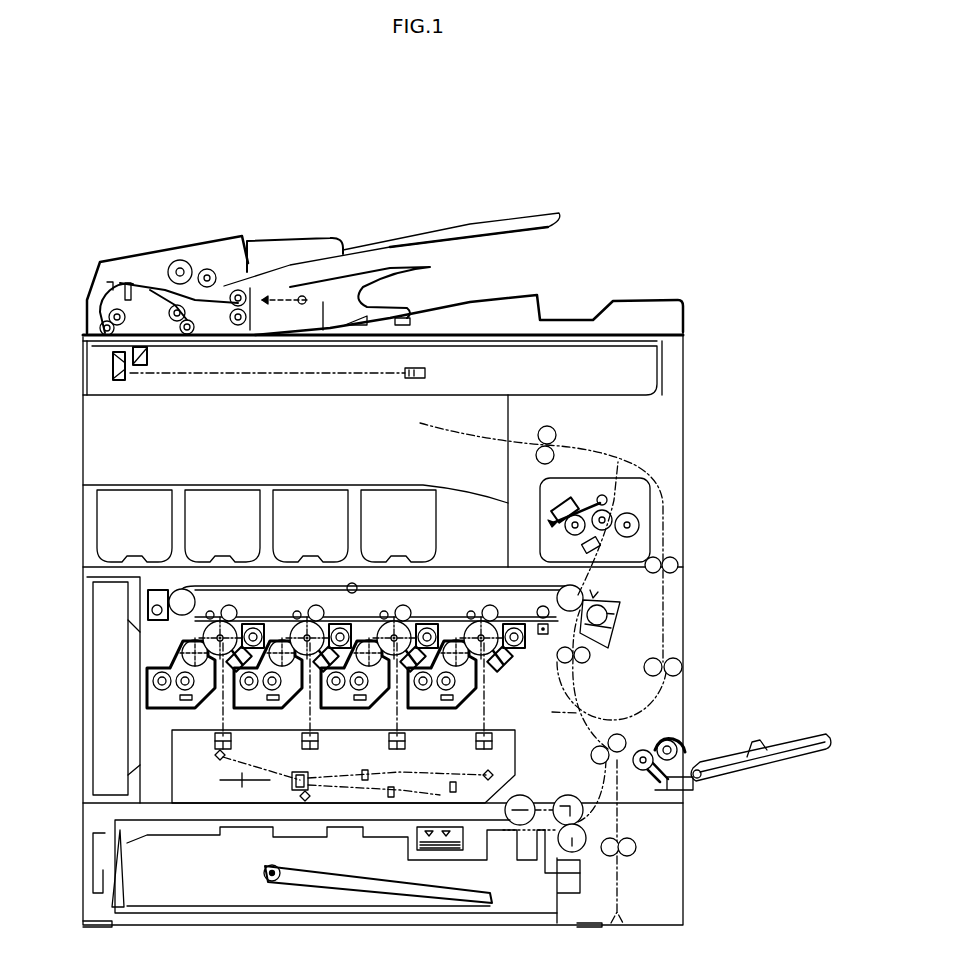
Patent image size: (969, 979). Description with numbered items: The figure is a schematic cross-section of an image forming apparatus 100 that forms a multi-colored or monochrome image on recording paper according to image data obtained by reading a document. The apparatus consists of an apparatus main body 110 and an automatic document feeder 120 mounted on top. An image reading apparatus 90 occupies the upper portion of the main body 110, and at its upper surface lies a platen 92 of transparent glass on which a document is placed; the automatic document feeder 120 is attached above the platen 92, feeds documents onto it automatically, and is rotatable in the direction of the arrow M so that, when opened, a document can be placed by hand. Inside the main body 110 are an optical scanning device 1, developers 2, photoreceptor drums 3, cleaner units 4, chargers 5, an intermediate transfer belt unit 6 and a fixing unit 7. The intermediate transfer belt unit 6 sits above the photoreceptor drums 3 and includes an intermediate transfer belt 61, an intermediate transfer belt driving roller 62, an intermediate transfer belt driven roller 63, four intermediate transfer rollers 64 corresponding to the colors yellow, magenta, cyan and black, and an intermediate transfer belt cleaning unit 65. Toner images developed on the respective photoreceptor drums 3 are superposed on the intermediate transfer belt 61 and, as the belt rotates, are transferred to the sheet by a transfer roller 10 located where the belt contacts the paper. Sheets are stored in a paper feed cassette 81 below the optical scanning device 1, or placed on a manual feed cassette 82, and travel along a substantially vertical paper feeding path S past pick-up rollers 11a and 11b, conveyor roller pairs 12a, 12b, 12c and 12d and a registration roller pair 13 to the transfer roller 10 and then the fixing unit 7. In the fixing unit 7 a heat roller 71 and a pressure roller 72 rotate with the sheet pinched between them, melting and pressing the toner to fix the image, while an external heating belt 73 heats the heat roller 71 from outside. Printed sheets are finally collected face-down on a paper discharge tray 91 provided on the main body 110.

The image forming apparatus 100 is at (655, 196).
The apparatus main body 110 is at (82, 453).
The automatic document feeder 120 is at (205, 224).
The arrow M is at (390, 198).
The image reading apparatus 90 is at (663, 367).
The paper discharge tray 91 is at (290, 484).
The platen 92 is at (462, 333).
The optical scanning device 1 is at (520, 745).
The developer 2 is at (180, 652).
The photoreceptor drum 3 is at (211, 613).
The cleaner unit 4 is at (254, 630).
The charger 5 is at (222, 700).
The intermediate transfer belt unit 6 is at (458, 586).
The intermediate transfer belt 61 is at (487, 585).
The intermediate transfer belt driving roller 62 is at (586, 590).
The intermediate transfer belt driven roller 63 is at (184, 590).
The intermediate transfer roller 64 is at (234, 610).
The intermediate transfer belt cleaning unit 65 is at (160, 589).
The fixing unit 7 is at (662, 497).
The heat roller 71 is at (606, 517).
The pressure roller 72 is at (640, 524).
The external heating belt 73 is at (593, 503).
The transfer roller 10 is at (606, 618).
The pick-up roller 11a is at (520, 800).
The pick-up roller 11b is at (679, 752).
The conveyor roller pair 12a is at (622, 748).
The conveyor roller pair 12b is at (556, 434).
The conveyor roller pair 12c is at (678, 564).
The conveyor roller pair 12d is at (680, 667).
The registration roller pair 13 is at (590, 654).
The paper feeding path S is at (543, 673).
The paper feed cassette 81 is at (330, 877).
The manual feed cassette 82 is at (770, 740).